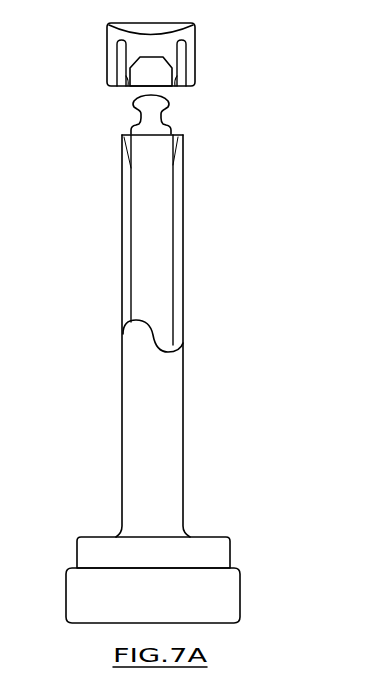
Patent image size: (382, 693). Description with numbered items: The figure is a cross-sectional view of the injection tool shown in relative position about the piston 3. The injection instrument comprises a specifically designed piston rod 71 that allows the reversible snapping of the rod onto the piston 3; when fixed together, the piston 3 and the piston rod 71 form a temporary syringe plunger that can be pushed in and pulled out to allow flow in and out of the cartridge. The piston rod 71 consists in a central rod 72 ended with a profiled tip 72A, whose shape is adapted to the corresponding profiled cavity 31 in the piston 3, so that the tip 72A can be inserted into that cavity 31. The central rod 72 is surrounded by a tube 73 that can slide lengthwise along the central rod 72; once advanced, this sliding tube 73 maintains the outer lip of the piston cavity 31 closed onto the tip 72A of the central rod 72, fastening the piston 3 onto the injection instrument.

The piston 3 is at (157, 46).
The profiled cavity 31 is at (145, 71).
The piston rod 71 is at (200, 359).
The central rod 72 is at (155, 277).
The profiled tip 72A is at (170, 108).
The tube 73 is at (185, 392).